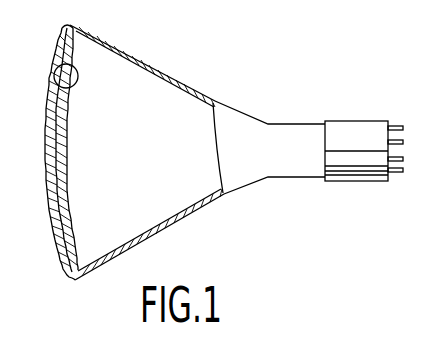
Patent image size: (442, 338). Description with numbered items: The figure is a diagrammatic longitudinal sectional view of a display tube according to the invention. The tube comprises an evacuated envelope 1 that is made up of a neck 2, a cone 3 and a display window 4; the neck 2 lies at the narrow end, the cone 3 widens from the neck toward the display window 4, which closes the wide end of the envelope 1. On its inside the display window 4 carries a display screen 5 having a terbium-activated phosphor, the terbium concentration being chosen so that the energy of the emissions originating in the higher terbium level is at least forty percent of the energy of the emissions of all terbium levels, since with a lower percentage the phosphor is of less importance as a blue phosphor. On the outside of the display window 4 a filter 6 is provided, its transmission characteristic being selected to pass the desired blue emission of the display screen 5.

The evacuated envelope 1 is at (134, 53).
The neck 2 is at (292, 125).
The cone 3 is at (205, 97).
The display window 4 is at (48, 118).
The display screen 5 is at (62, 65).
The filter 6 is at (50, 200).